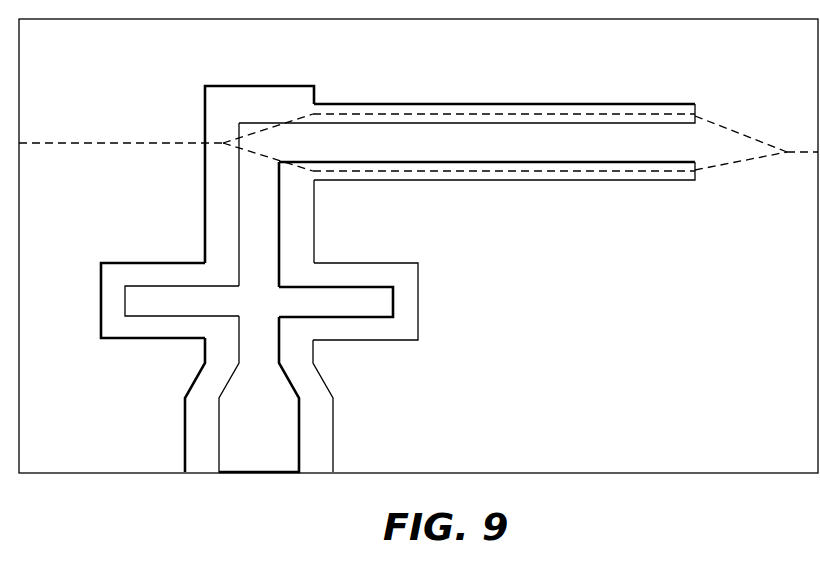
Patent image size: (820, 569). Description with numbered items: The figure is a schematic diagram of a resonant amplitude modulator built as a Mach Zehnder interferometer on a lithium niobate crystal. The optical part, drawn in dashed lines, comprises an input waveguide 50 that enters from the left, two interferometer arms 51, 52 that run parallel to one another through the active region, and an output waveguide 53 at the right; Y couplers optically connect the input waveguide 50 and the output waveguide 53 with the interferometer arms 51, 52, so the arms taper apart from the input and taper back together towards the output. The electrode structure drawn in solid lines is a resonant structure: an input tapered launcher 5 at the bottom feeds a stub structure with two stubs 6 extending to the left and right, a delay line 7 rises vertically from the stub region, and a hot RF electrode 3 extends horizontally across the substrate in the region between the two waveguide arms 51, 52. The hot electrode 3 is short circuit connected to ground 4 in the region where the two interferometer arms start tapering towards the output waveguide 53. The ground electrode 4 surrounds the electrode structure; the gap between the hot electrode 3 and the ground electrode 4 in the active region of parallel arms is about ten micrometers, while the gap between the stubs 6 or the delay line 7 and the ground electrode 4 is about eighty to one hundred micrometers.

The hot (RF) electrode 3 is at (418, 138).
The ground electrode 4 is at (572, 271).
The input (tapered) launcher 5 is at (283, 429).
The stubs 6 is at (162, 308).
The delay line 7 is at (260, 227).
The input waveguide 50 is at (133, 143).
The interferometer arm 51 is at (647, 115).
The interferometer arm 52 is at (622, 173).
The output waveguide 53 is at (795, 152).